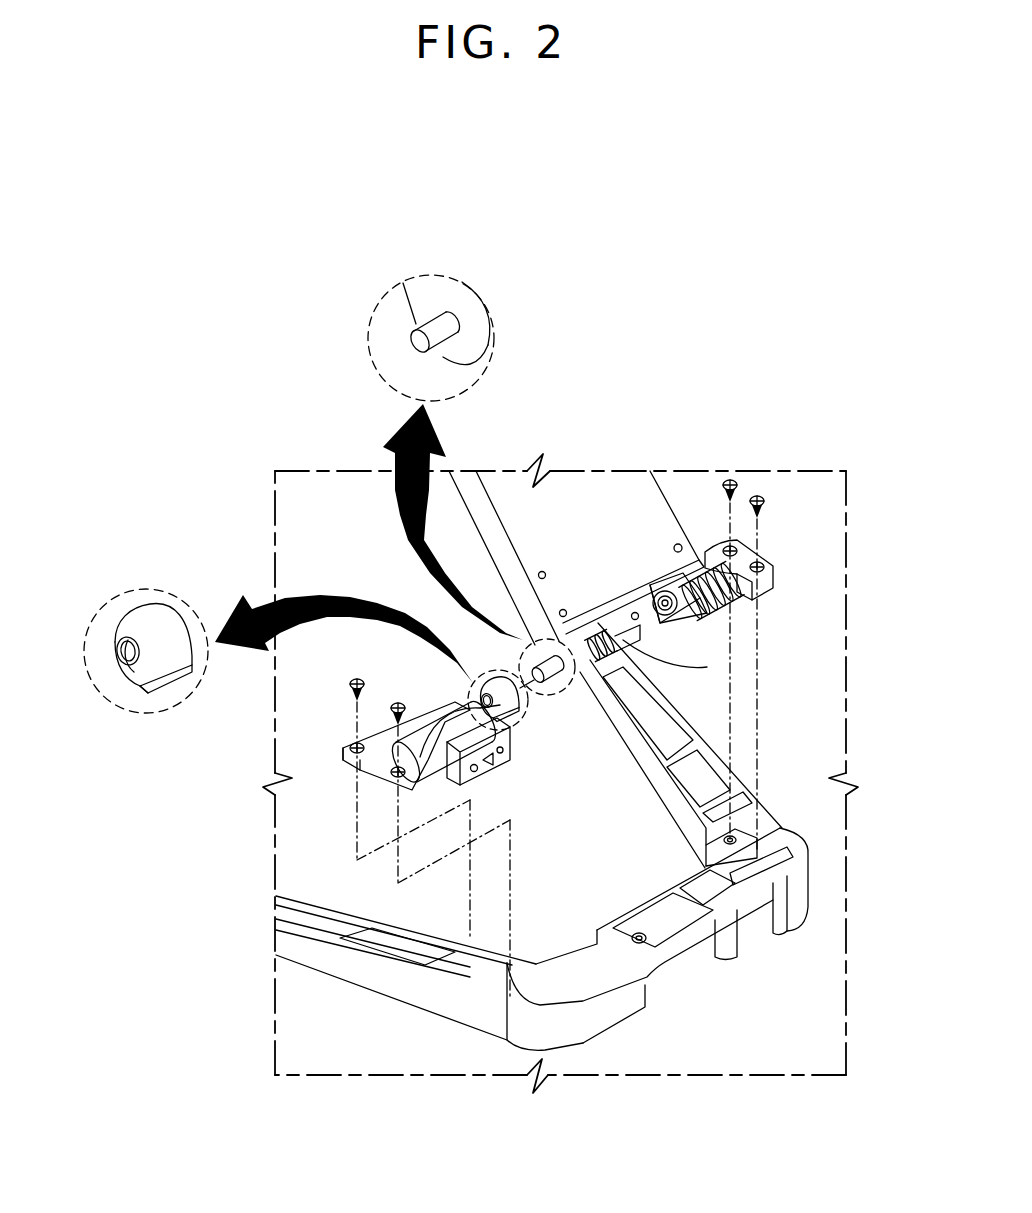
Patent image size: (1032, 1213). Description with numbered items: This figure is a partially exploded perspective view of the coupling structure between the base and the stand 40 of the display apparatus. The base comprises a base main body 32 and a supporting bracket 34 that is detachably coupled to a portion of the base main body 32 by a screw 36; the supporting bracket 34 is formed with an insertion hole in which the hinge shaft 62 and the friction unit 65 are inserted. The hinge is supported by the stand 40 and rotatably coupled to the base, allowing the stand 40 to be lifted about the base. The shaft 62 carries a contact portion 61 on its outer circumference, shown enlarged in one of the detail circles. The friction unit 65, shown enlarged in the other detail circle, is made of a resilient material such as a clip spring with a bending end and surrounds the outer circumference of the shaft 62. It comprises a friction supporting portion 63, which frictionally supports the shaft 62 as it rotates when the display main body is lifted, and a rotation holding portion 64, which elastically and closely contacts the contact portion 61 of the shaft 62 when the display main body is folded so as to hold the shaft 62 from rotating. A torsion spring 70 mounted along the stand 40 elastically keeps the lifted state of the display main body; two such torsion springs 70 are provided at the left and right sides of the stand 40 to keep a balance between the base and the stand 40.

The base main body 32 is at (812, 880).
The supporting bracket 34 is at (345, 747).
The screw 36 is at (352, 685).
The stand 40 is at (624, 492).
The contact portion 61 is at (400, 348).
The shaft 62 is at (410, 322).
The friction supporting portion 63 is at (134, 630).
The rotation holding portion 64 is at (118, 660).
The friction unit 65 is at (117, 611).
The torsion spring 70 is at (707, 617).